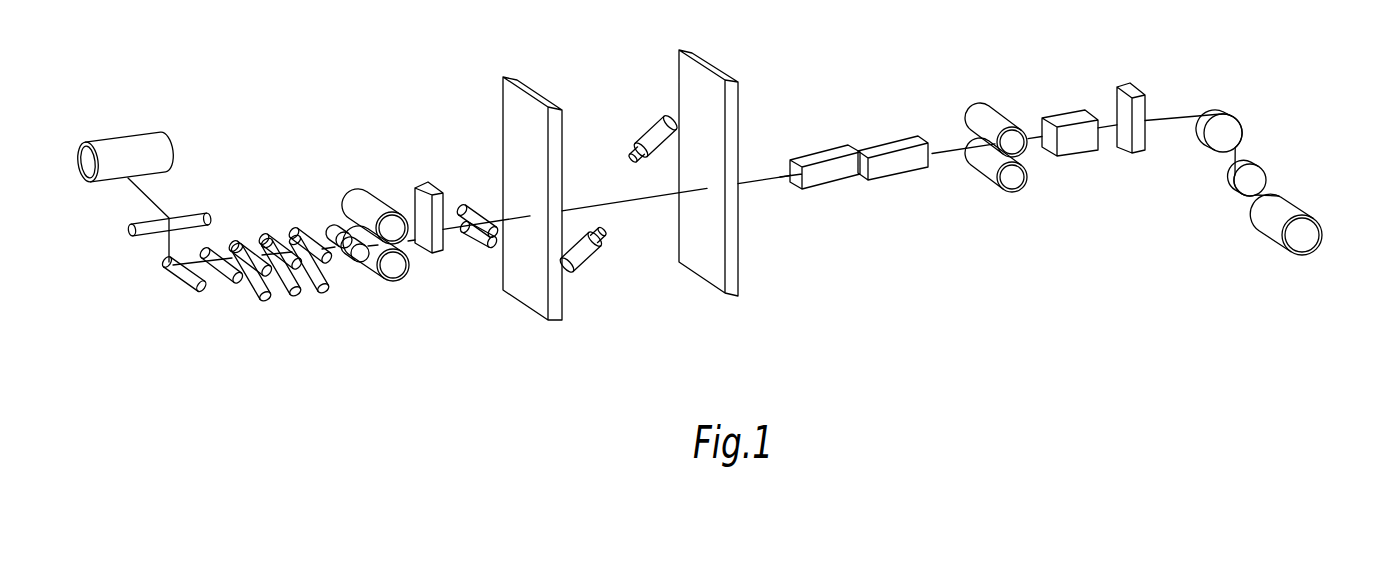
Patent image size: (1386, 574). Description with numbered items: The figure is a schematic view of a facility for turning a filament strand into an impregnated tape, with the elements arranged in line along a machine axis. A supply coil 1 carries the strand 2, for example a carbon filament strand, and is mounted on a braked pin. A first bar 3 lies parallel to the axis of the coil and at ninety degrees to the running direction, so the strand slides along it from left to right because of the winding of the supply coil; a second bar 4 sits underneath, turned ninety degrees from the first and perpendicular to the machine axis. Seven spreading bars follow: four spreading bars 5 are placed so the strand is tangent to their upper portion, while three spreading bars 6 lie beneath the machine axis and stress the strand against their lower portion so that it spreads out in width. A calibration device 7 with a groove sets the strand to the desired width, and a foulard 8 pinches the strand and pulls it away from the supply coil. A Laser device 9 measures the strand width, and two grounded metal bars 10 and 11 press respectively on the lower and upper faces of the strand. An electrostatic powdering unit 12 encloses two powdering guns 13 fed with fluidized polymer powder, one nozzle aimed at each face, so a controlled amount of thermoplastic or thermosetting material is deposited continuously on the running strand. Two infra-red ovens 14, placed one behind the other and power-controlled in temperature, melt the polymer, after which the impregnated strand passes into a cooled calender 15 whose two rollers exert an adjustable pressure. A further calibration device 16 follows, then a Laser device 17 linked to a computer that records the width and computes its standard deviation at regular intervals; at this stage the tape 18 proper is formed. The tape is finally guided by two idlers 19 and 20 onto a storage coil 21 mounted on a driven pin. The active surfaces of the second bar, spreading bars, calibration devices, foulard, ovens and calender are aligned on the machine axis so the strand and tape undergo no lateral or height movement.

The supply coil 1 is at (124, 145).
The strand 2 is at (142, 198).
The first bar 3 is at (194, 216).
The second bar 4 is at (177, 282).
The spreading bars 5 is at (267, 243).
The spreading bars 6 is at (268, 300).
The calibration device 7 is at (363, 256).
The foulard 8 is at (400, 268).
The Laser device 9 is at (420, 192).
The metal bar 10 is at (474, 245).
The metal bar 11 is at (478, 214).
The electrostatic powdering unit 12 is at (657, 323).
The powdering guns 13 is at (650, 130).
The infra-red ovens 14 is at (827, 180).
The cooled calender 15 is at (1013, 180).
The calibration device 16 is at (1085, 142).
The Laser device 17 is at (1141, 138).
The tape 18 is at (1110, 122).
The idler 19 is at (1232, 123).
The idler 20 is at (1258, 178).
The storage coil 21 is at (1307, 231).